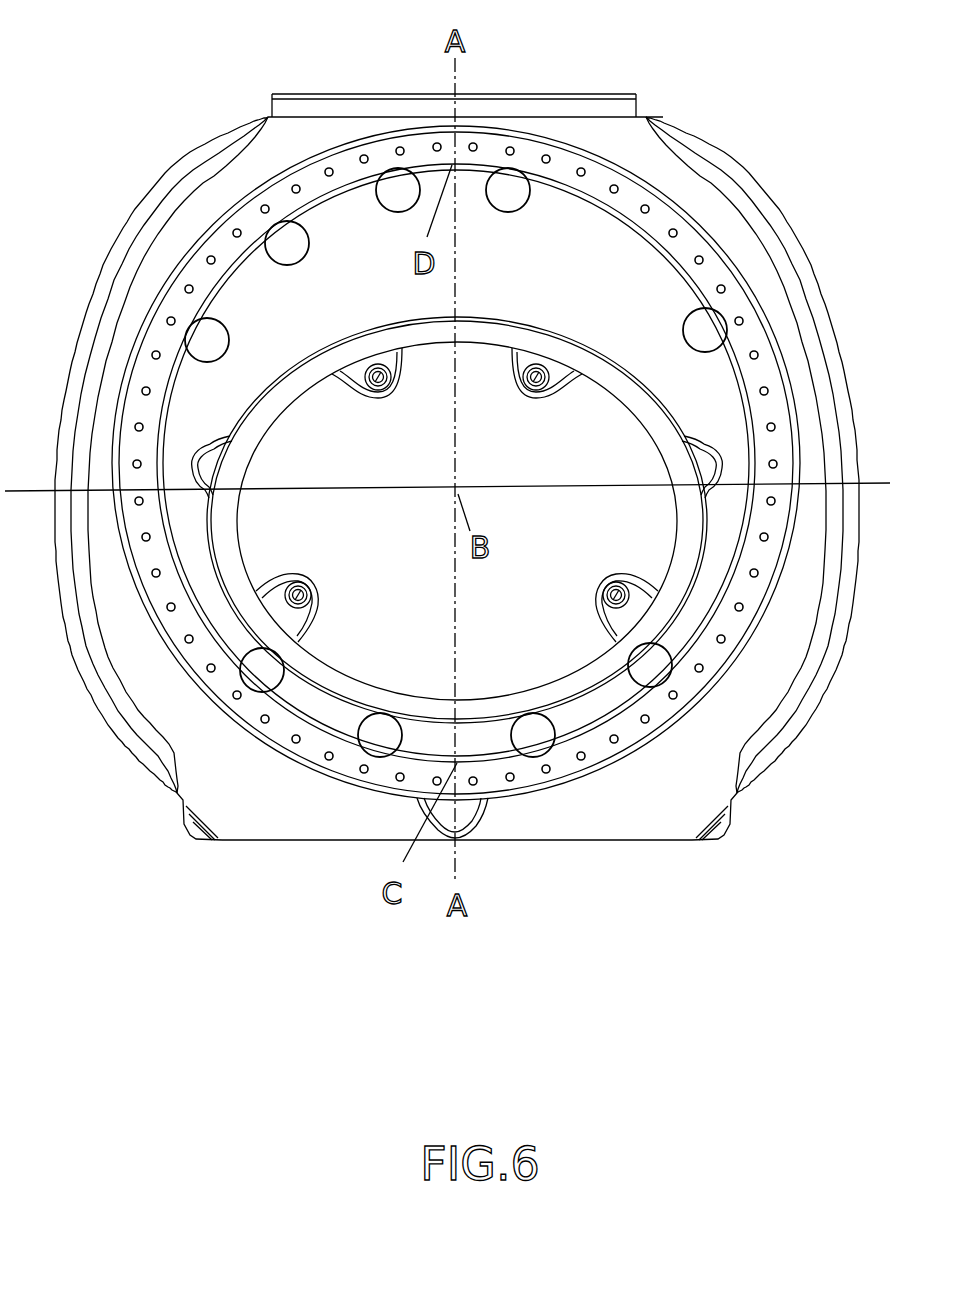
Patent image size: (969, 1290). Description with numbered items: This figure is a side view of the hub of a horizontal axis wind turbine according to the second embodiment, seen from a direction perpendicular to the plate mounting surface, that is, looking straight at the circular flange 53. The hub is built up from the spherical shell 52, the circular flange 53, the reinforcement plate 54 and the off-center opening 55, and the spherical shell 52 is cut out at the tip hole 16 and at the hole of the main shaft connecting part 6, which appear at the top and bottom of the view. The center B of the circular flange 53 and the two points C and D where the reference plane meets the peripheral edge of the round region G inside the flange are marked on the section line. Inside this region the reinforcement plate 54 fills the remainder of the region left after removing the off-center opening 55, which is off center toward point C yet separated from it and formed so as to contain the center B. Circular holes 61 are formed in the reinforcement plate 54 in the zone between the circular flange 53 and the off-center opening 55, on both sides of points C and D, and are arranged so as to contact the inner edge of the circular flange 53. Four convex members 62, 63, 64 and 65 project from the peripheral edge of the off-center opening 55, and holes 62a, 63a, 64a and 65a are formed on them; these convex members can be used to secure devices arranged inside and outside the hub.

The main shaft connecting part 6 is at (657, 846).
The tip hole 16 is at (347, 90).
The spherical shell 52 is at (640, 133).
The circular flange 53 is at (219, 240).
The reinforcement plate 54 is at (657, 280).
The off-center opening 55 is at (268, 422).
The circular holes 61 is at (403, 170).
The convex member 62 is at (392, 397).
The hole 62a is at (368, 394).
The convex member 63 is at (546, 397).
The hole 63a is at (523, 392).
The convex member 64 is at (303, 572).
The hole 64a is at (317, 588).
The convex member 65 is at (613, 568).
The hole 65a is at (597, 587).